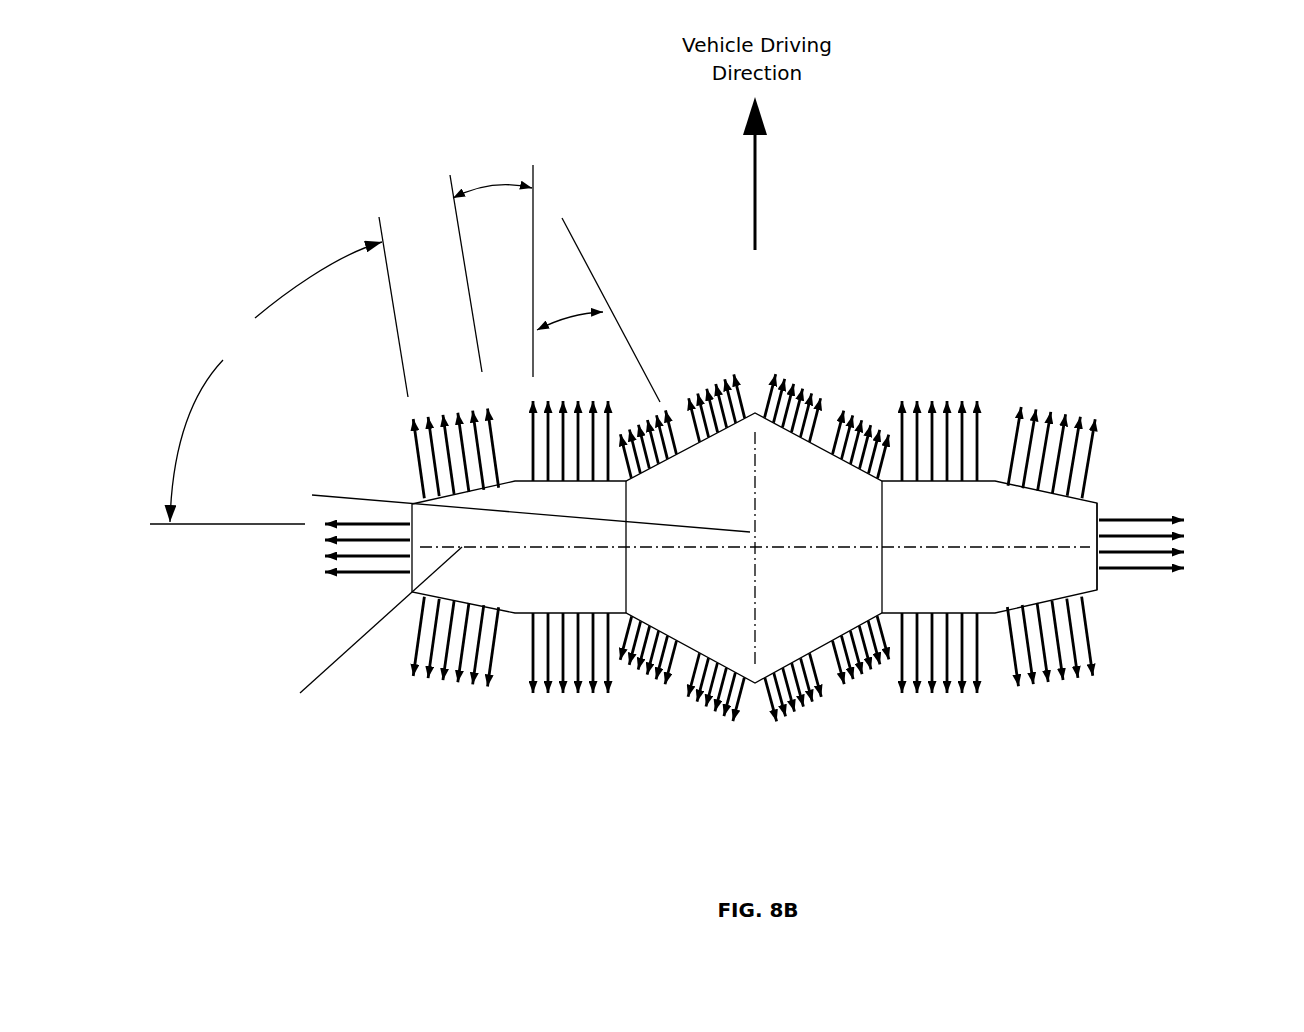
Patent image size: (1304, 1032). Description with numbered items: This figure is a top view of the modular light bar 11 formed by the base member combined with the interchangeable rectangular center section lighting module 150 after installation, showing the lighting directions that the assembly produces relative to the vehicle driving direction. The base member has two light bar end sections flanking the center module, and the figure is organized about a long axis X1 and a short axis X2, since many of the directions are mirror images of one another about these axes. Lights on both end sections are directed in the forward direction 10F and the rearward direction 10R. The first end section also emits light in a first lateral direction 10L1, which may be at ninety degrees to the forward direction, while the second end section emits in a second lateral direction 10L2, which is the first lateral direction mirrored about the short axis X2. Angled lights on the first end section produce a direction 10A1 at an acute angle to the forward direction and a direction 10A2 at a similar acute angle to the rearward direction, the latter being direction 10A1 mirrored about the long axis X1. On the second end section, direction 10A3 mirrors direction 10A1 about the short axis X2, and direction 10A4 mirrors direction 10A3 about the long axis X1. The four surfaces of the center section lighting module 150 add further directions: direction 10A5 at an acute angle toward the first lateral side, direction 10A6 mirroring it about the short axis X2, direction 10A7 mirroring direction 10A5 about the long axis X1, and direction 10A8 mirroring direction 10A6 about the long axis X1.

The modular light bar 11 is at (1008, 368).
The center section lighting module 150 is at (890, 552).
The direction at an acute angle to the forward direction 10A1 is at (417, 466).
The direction at a second acute angle to the rearward direction 10A2 is at (412, 638).
The direction at an acute angle to the forward direction 10A3 is at (1100, 463).
The direction at an acute angle to the rearward direction 10A4 is at (1102, 638).
The direction at an acute angle to the forward direction 10A5 is at (737, 383).
The direction at a second acute angle to the forward direction 10A6 is at (781, 383).
The direction at an acute angle to the rearward direction 10A7 is at (735, 712).
The direction at an acute angle to the rearward direction 10A8 is at (774, 712).
The forward direction 10F is at (527, 448).
The rearward direction 10R is at (525, 660).
The first lateral direction 10L1 is at (370, 578).
The second lateral direction 10L2 is at (1147, 573).
The long axis X1 is at (363, 633).
The short axis X2 is at (515, 506).